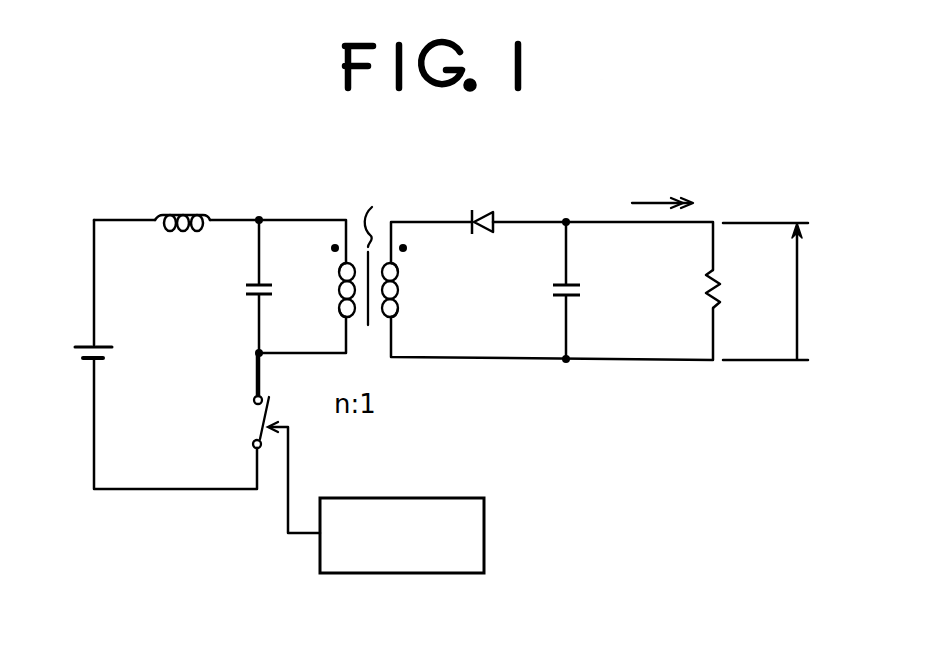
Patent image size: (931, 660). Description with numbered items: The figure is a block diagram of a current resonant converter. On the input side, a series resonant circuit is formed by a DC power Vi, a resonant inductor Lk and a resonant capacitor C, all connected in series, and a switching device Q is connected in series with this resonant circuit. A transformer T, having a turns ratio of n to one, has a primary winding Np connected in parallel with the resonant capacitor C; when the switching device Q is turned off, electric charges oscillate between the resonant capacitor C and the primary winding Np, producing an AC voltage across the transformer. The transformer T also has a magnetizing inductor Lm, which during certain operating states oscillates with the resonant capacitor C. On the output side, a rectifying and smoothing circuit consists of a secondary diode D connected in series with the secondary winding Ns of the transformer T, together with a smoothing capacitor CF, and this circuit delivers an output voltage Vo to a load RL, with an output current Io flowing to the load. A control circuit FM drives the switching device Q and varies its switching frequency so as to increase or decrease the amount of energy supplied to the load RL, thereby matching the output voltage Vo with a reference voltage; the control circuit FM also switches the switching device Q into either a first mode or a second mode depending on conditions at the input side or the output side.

The DC power Vi is at (77, 352).
The resonant inductor Lk is at (182, 201).
The resonant capacitor C is at (248, 287).
The primary winding Np is at (325, 280).
The transformer T is at (367, 248).
The secondary winding Ns is at (413, 280).
The secondary diode D is at (484, 204).
The smoothing capacitor CF is at (587, 287).
The load RL is at (735, 290).
The output voltage Vo is at (818, 267).
The output current Io is at (662, 187).
The switching device Q is at (250, 422).
The magnetizing inductor Lm is at (354, 443).
The control circuit FM is at (423, 498).